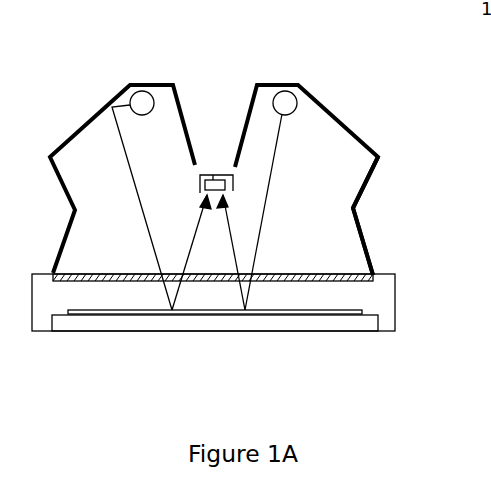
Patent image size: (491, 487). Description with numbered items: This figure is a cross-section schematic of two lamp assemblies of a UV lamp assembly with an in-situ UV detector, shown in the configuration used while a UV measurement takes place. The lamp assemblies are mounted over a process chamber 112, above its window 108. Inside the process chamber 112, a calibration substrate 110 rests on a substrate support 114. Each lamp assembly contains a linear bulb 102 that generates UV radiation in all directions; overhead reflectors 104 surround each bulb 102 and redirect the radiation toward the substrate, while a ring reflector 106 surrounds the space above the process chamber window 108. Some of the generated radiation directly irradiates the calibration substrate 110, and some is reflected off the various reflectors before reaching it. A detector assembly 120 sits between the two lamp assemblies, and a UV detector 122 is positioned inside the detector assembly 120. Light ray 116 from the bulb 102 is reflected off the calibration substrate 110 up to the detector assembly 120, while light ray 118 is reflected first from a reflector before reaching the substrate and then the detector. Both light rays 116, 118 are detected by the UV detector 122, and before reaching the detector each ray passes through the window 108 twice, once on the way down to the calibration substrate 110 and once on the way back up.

The linear bulb 102 is at (296, 84).
The overhead reflector 104 is at (182, 103).
The ring reflector 106 is at (368, 240).
The window 108 is at (358, 280).
The calibration substrate 110 is at (323, 310).
The process chamber 112 is at (38, 308).
The substrate support 114 is at (192, 322).
The light ray 116 is at (270, 187).
The light ray 118 is at (130, 175).
The detector assembly 120 is at (199, 185).
The UV detector 122 is at (213, 180).